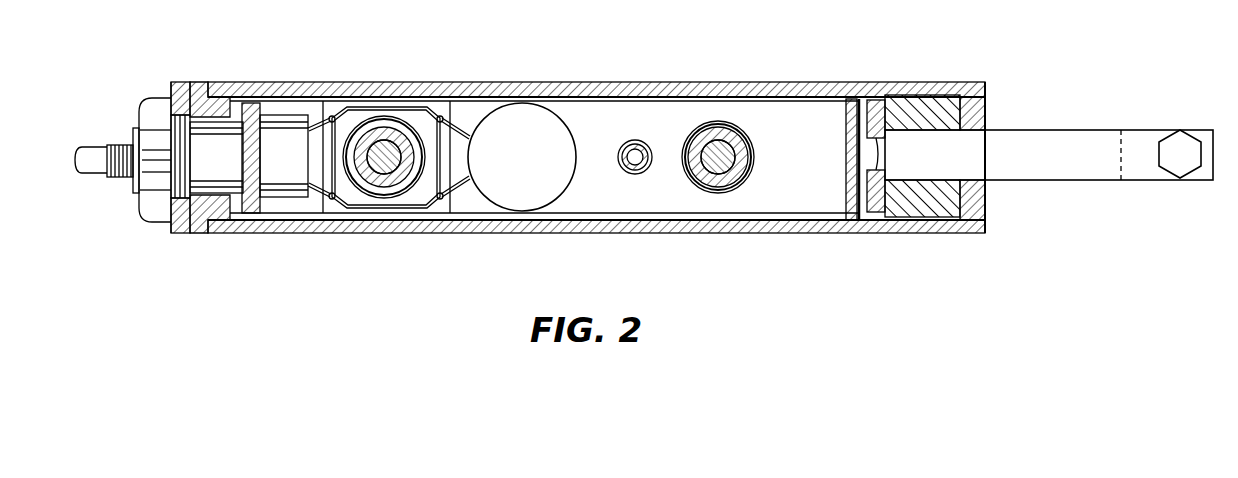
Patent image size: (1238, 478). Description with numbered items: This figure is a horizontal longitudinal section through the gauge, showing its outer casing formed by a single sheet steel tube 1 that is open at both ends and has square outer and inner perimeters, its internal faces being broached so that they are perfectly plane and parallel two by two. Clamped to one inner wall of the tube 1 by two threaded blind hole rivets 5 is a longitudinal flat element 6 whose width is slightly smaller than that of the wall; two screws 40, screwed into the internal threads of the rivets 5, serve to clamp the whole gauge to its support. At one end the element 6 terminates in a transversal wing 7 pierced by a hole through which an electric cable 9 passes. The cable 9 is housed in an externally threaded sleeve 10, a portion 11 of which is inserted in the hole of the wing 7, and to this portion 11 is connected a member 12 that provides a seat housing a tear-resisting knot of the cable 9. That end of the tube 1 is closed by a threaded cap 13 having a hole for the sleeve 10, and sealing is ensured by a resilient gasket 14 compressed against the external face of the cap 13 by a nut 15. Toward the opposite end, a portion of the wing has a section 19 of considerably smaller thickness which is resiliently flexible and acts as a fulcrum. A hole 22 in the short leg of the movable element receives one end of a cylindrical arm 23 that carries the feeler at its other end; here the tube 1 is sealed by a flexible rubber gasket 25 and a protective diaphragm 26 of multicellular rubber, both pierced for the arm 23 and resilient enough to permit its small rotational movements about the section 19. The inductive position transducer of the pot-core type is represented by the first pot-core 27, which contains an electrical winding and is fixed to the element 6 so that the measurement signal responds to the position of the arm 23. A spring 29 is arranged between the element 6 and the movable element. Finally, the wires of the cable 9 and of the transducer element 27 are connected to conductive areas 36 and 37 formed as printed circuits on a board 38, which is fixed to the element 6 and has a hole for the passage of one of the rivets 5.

The sheet steel tube 1 is at (595, 233).
The threaded blind hole rivets 5 is at (387, 130).
The longitudinal flat element 6 is at (597, 118).
The wing 7 is at (258, 210).
The electric cable 9 is at (98, 147).
The sleeve 10 is at (203, 205).
The portion of sleeve 11 is at (240, 157).
The member 12 is at (296, 168).
The threaded cap 13 is at (198, 82).
The resilient gasket 14 is at (175, 82).
The nut 15 is at (150, 97).
The section of reduced thickness 19 is at (845, 133).
The hole 22 is at (885, 142).
The cylindrical arm 23 is at (1085, 130).
The flexible rubber gasket 25 is at (935, 215).
The protective diaphragm 26 is at (985, 117).
The pot-core 27 is at (542, 167).
The spring 29 is at (640, 147).
The conductive area 36 is at (360, 108).
The conductive area 37 is at (375, 208).
The board 38 is at (320, 202).
The screws 40 is at (408, 135).